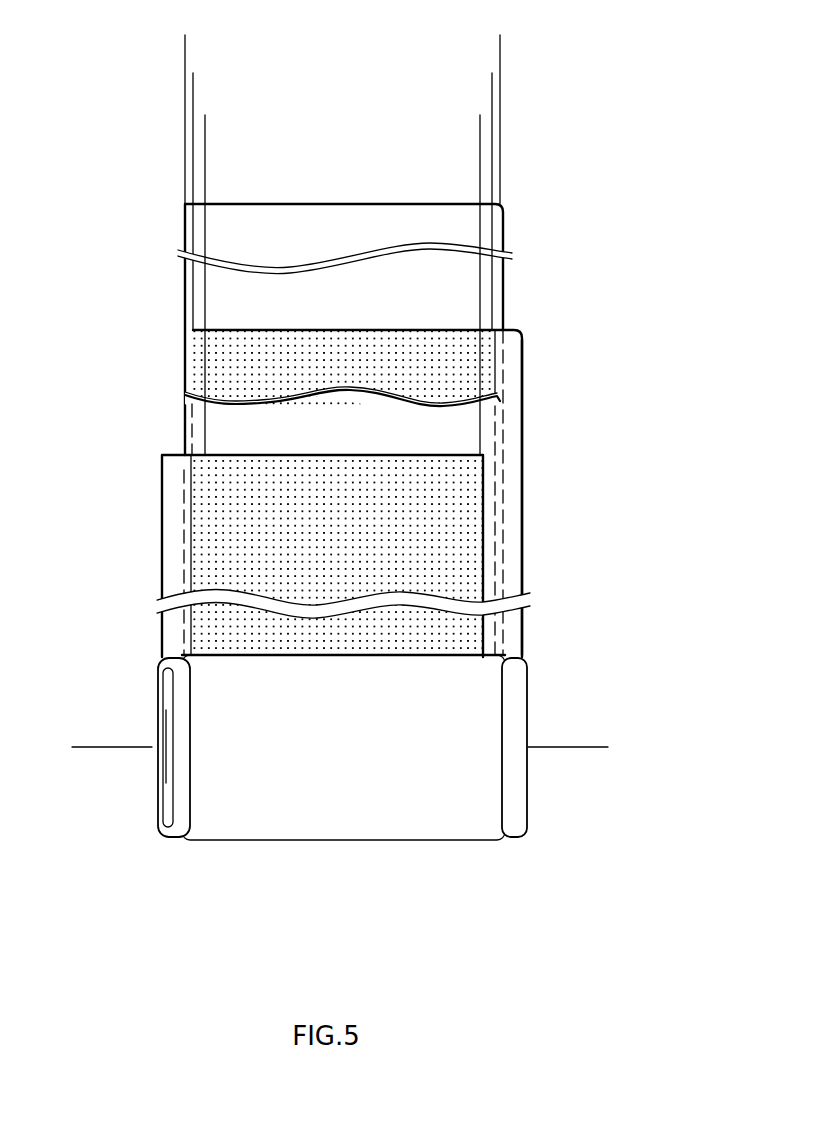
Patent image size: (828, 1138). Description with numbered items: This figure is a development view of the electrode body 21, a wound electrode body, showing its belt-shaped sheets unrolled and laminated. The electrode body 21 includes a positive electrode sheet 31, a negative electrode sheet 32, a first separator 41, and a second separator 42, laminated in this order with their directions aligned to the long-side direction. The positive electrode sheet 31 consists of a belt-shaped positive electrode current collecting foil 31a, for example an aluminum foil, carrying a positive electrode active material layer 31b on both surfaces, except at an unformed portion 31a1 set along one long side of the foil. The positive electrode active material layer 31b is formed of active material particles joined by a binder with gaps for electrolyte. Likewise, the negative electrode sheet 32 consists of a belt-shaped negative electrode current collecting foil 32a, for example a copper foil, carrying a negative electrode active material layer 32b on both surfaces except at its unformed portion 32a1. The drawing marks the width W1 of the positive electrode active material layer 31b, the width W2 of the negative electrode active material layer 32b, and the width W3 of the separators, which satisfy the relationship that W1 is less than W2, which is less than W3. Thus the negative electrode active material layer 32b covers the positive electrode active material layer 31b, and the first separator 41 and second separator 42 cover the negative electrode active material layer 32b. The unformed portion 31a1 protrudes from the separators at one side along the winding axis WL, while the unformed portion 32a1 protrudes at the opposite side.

The electrode body 21 is at (558, 188).
The positive electrode sheet 31 is at (320, 556).
The positive electrode current collecting foil 31a is at (162, 473).
The unformed portion 31a1 is at (172, 585).
The positive electrode active material layer 31b is at (235, 547).
The negative electrode sheet 32 is at (422, 469).
The negative electrode current collecting foil 32a is at (524, 500).
The unformed portion 32a1 is at (513, 450).
The negative electrode active material layer 32b is at (433, 357).
The first separator 41 is at (183, 408).
The second separator 42 is at (183, 302).
The width of the positive electrode active material layer W1 is at (205, 126).
The width of the negative electrode active material layer W2 is at (193, 85).
The width of the separators W3 is at (185, 47).
The winding axis WL is at (602, 745).